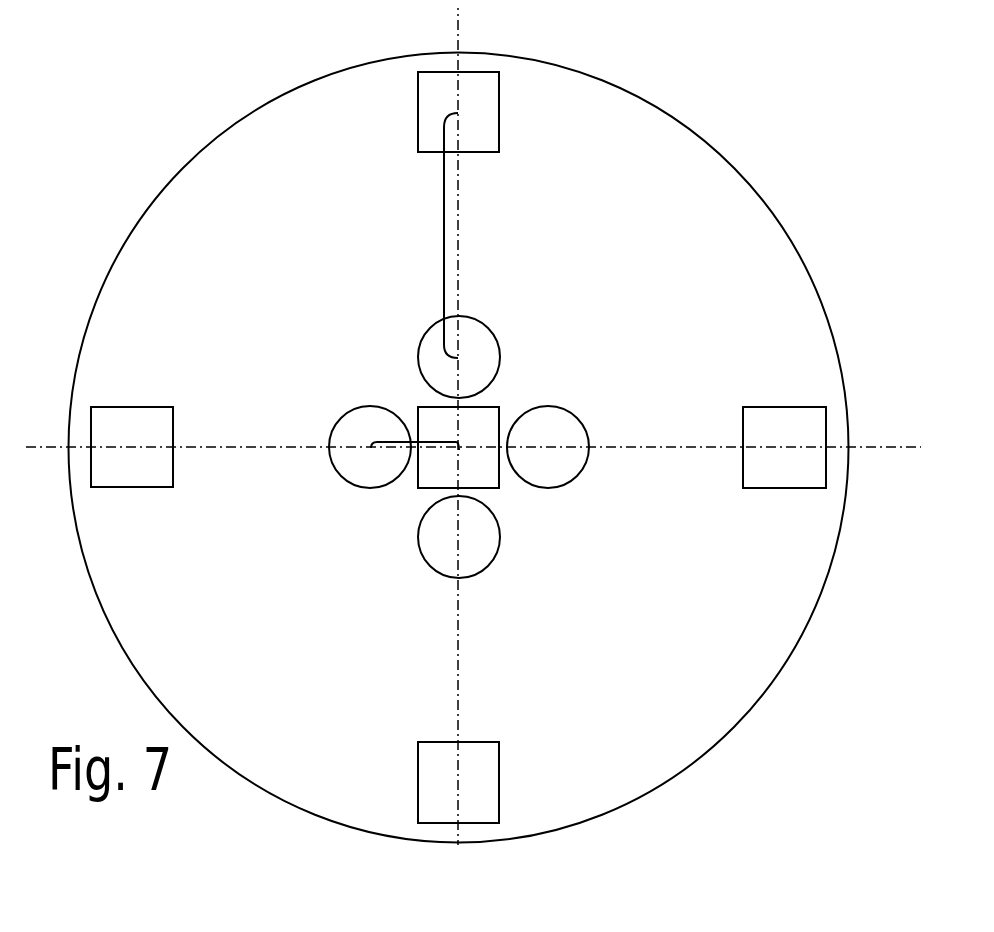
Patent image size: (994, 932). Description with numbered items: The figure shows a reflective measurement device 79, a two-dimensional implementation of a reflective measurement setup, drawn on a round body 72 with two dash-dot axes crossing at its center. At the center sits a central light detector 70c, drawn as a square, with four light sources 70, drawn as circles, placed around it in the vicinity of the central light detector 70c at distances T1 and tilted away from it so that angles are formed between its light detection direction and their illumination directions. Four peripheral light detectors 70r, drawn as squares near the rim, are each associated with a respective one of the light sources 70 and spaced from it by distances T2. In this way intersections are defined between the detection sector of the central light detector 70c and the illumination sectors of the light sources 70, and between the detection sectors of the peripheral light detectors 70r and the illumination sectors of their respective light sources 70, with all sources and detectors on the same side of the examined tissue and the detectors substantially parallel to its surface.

The stage / rotary table 72 is at (163, 188).
The reflective measurement device 79 is at (235, 606).
The peripheral light detectors 70r is at (498, 112).
The light sources 70 is at (487, 322).
The central light detector 70c is at (502, 406).
The distances T1 is at (416, 442).
The distances T2 is at (443, 243).